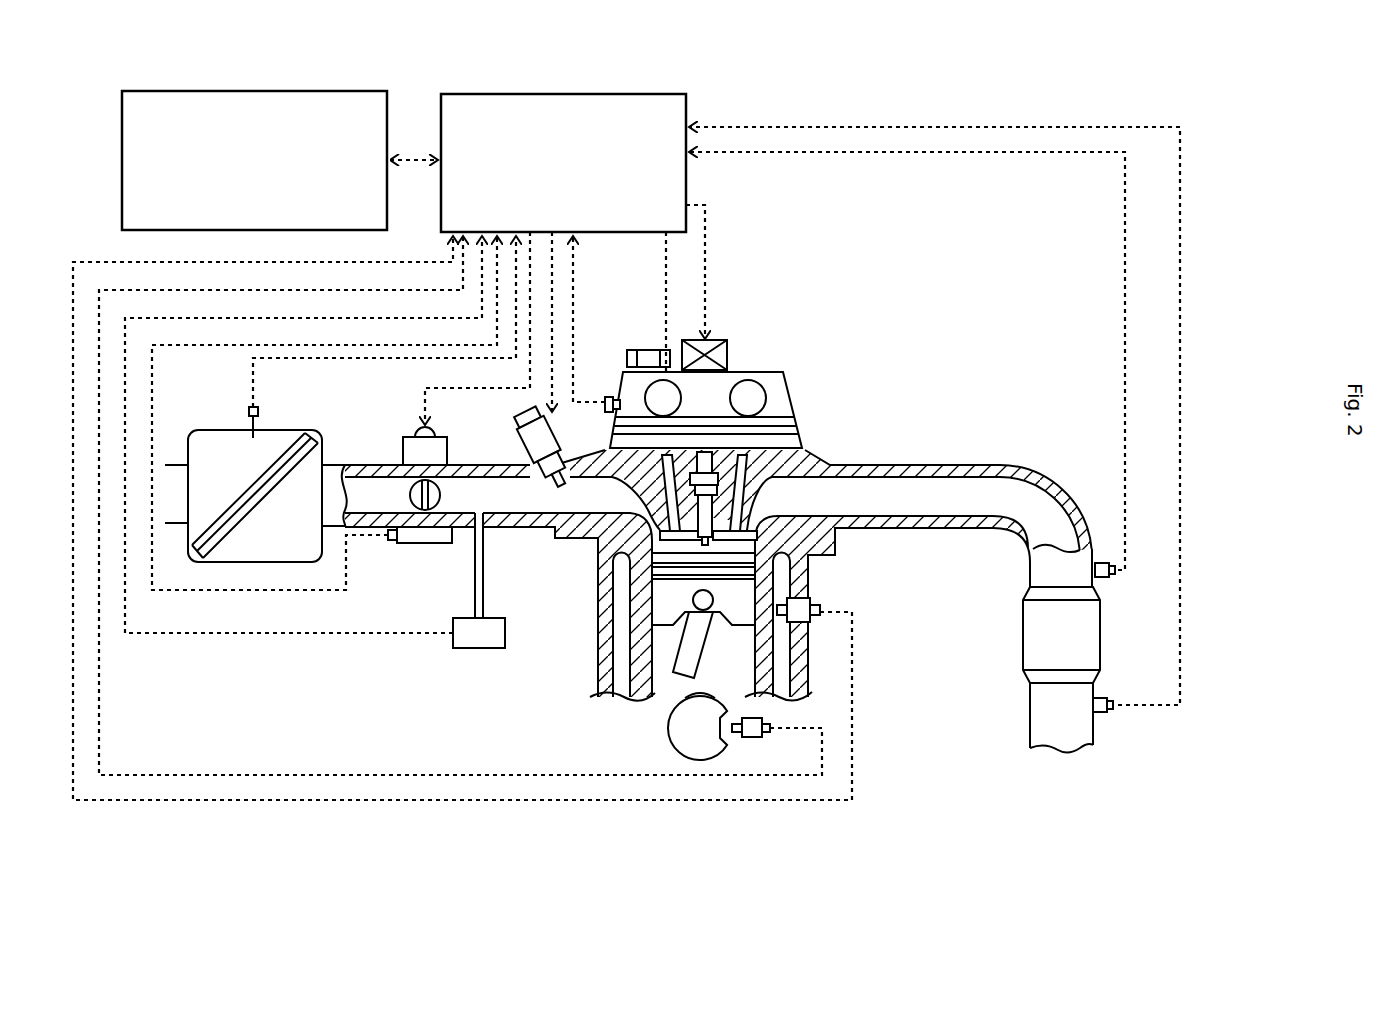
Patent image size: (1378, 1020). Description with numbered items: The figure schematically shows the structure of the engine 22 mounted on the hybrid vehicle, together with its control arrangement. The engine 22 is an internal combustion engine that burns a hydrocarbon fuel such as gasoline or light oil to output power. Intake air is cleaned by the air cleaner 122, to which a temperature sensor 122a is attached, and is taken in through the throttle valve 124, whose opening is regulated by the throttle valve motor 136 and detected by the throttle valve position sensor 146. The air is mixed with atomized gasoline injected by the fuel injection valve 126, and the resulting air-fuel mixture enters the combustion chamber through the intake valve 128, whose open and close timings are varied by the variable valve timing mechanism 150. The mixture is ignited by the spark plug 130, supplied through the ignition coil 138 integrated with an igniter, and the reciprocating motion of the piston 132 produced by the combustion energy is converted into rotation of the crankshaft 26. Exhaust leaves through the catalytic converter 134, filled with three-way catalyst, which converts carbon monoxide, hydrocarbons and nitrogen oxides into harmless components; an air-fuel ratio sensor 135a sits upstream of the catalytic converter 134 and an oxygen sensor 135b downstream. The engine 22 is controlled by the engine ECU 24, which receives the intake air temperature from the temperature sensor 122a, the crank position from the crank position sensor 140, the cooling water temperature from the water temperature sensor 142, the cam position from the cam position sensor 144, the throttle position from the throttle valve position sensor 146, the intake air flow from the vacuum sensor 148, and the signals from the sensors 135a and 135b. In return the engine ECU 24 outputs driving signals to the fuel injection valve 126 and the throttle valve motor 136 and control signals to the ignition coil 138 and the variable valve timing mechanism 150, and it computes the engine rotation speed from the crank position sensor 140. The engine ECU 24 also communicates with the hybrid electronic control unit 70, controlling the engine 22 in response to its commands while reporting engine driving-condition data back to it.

The hybrid electronic control unit 70 is at (253, 90).
The engine electronic control unit 24 is at (565, 94).
The engine 22 is at (783, 468).
The crankshaft 26 is at (668, 728).
The air cleaner 122 is at (225, 430).
The temperature sensor 122a is at (258, 412).
The throttle valve 124 is at (418, 494).
The fuel injection valve 126 is at (532, 472).
The intake valve 128 is at (668, 512).
The spark plug 130 is at (705, 522).
The piston 132 is at (667, 600).
The catalytic converter 134 is at (1035, 643).
The air-fuel ratio sensor 135a is at (1102, 562).
The oxygen sensor 135b is at (1108, 712).
The throttle valve motor 136 is at (405, 440).
The ignition coil 138 is at (728, 356).
The crank position sensor 140 is at (750, 738).
The water temperature sensor 142 is at (815, 600).
The cam position sensor 144 is at (606, 397).
The throttle valve position sensor 146 is at (427, 544).
The vacuum sensor 148 is at (478, 650).
The variable valve timing mechanism 150 is at (793, 409).